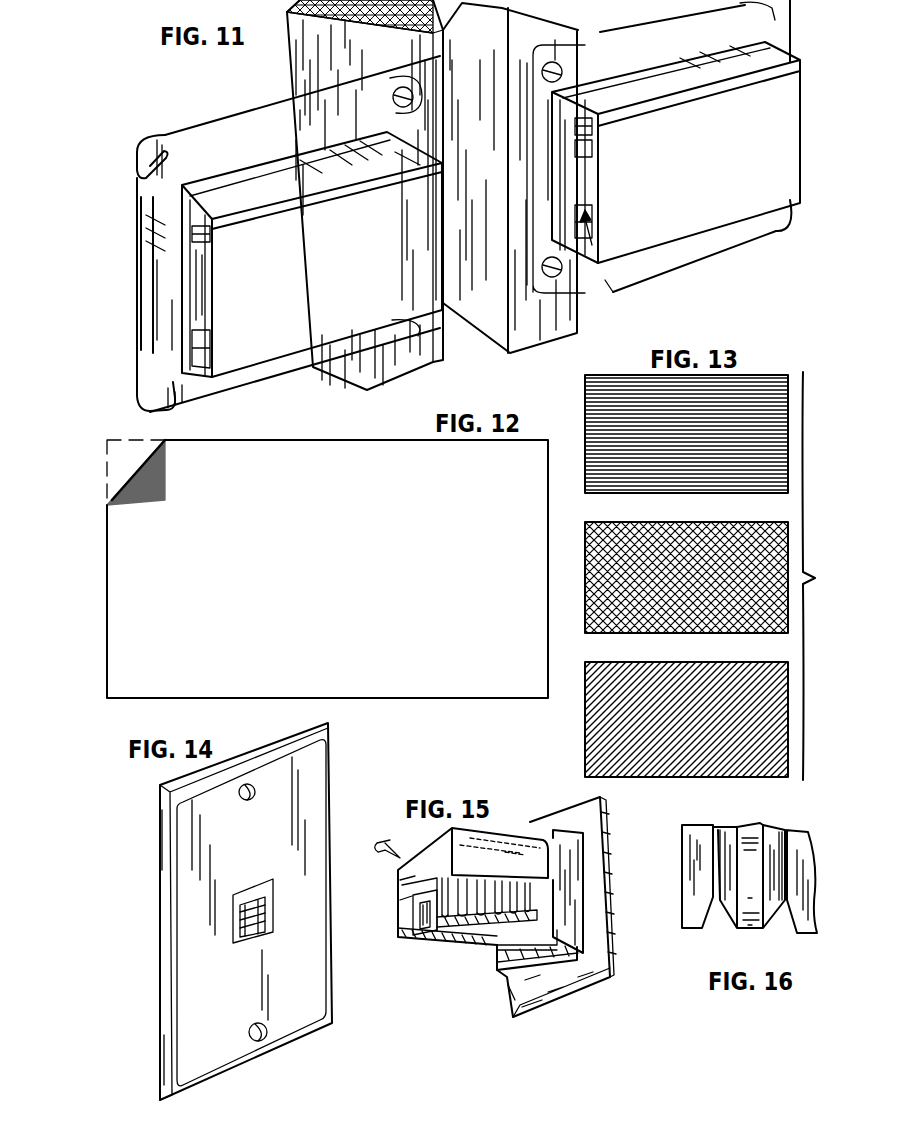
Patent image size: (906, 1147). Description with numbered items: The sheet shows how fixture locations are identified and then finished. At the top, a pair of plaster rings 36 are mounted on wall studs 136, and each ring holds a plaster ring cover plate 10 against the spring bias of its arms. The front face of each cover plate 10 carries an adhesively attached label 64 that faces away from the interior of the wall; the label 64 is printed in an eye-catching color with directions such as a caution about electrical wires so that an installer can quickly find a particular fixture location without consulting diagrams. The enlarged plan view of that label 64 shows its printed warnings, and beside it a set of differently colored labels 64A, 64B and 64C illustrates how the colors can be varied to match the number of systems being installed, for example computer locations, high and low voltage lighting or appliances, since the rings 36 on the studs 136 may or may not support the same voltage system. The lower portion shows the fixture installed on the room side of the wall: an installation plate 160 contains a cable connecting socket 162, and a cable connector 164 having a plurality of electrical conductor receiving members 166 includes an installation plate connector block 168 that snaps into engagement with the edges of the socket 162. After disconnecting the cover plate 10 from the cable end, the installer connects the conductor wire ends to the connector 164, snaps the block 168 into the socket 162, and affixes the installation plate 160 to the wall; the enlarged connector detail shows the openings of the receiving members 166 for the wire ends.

In FIG. 11, the plaster ring cover plate 10 is at (192, 312).
In FIG. 11, the plaster ring 36 is at (217, 147).
In FIG. 11, the label 64 is at (295, 313).
In FIG. 12, the label 64 is at (125, 640).
In FIG. 13, the colored label 64A is at (750, 392).
In FIG. 13, the colored label 64B is at (788, 527).
In FIG. 13, the colored label 64C is at (767, 683).
In FIG. 11, the stud 136 is at (305, 55).
In FIG. 14, the installation plate 160 is at (305, 813).
In FIG. 15, the installation plate 160 is at (523, 995).
In FIG. 14, the cable connecting socket 162 is at (273, 913).
In FIG. 15, the cable connecting socket 162 is at (400, 898).
In FIG. 15, the cable connector 164 is at (477, 857).
In FIG. 15, the electrical conductor receiving members 166 is at (423, 920).
In FIG. 16, the electrical conductor receiving members 166 is at (723, 826).
In FIG. 15, the installation plate connector block 168 is at (573, 930).